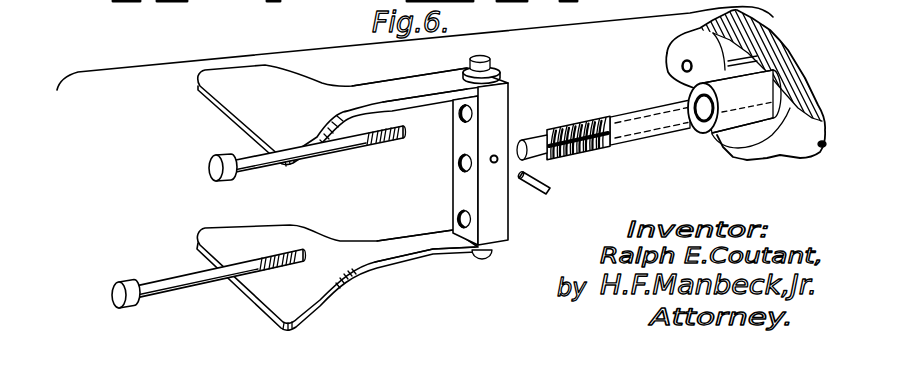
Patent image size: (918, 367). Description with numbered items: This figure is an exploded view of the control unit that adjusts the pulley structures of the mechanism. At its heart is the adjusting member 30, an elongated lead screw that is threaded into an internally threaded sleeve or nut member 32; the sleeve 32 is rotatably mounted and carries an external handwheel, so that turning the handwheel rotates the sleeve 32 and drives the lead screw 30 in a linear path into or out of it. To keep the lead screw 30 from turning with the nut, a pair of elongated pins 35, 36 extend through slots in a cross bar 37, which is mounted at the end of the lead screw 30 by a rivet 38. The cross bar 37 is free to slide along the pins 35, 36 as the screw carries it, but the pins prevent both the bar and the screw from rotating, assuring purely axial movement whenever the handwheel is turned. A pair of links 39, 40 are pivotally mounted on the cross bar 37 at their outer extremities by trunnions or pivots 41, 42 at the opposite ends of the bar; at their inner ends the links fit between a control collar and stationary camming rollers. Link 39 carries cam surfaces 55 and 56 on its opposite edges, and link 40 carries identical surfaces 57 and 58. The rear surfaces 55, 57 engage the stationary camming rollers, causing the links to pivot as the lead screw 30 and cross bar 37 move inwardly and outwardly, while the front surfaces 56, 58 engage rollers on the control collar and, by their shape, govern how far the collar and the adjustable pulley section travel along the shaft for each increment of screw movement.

The adjusting member 30 is at (591, 120).
The internally threaded sleeve 32 is at (688, 91).
The elongated pin 35 is at (247, 157).
The elongated pin 36 is at (161, 283).
The cross bar 37 is at (505, 103).
The rivet 38 is at (541, 178).
The link 39 is at (398, 80).
The link 40 is at (423, 243).
The trunnion 41 is at (488, 62).
The trunnion 42 is at (485, 252).
The cam surface 55 is at (353, 111).
The cam surface 56 is at (333, 125).
The cam surface 57 is at (337, 255).
The cam surface 58 is at (322, 300).